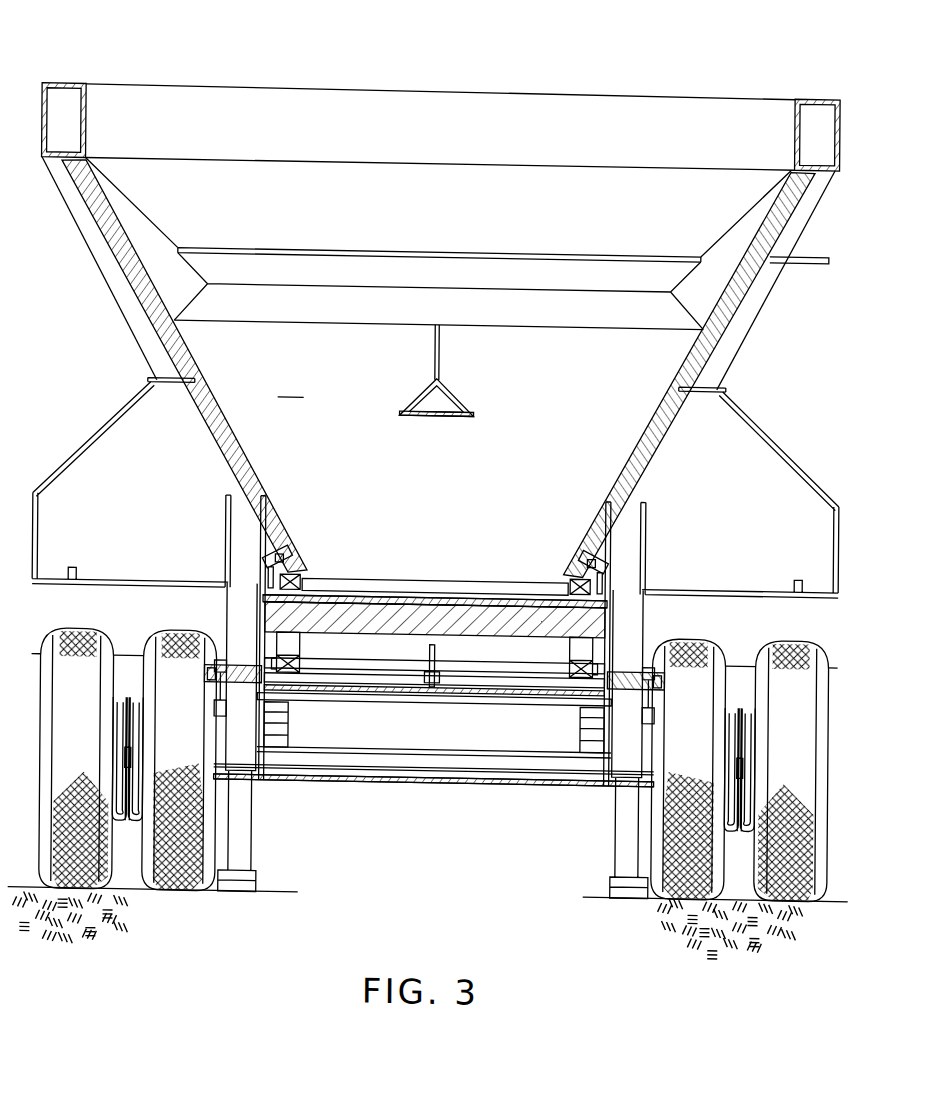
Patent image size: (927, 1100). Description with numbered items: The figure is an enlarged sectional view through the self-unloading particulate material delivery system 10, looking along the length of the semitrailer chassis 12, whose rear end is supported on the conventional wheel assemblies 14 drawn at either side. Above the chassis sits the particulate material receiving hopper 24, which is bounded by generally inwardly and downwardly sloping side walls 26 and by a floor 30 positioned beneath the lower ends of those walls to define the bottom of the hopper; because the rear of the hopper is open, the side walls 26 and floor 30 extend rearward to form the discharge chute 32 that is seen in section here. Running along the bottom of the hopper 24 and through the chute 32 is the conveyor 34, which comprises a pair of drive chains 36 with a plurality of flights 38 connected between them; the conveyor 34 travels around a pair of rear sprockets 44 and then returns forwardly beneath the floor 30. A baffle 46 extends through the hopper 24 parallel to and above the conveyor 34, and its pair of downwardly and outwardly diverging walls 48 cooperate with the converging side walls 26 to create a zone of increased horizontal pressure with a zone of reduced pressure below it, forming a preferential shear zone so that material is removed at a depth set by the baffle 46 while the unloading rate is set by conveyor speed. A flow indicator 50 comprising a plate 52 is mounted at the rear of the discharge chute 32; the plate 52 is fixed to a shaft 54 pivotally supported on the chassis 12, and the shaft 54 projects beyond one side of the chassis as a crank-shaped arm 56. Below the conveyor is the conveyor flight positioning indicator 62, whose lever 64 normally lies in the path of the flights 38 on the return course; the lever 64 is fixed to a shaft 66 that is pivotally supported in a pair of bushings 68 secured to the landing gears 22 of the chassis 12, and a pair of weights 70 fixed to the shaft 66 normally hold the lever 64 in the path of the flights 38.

The self-unloading particulate material delivery system 10 is at (558, 78).
The semitrailer chassis 12 is at (105, 413).
The wheel assemblies 14 is at (160, 871).
The landing gears 22 is at (238, 746).
The particulate material receiving hopper 24 is at (184, 175).
The side walls 26 is at (194, 353).
The floor 30 is at (395, 571).
The discharge chute 32 is at (547, 265).
The conveyor 34 is at (485, 569).
The drive chains 36 is at (282, 550).
The flights 38 is at (332, 572).
The rear sprockets 44 is at (287, 638).
The baffle 46 is at (429, 372).
The diverging walls 48 is at (403, 389).
The flow indicator 50 is at (241, 246).
The plate 52 is at (292, 386).
The shaft 54 is at (356, 247).
The crank-shaped arm 56 is at (818, 250).
The conveyor flight positioning indicator 62 is at (241, 649).
The lever 64 is at (426, 641).
The shaft 66 is at (459, 674).
The bushings 68 is at (241, 668).
The weights 70 is at (216, 706).